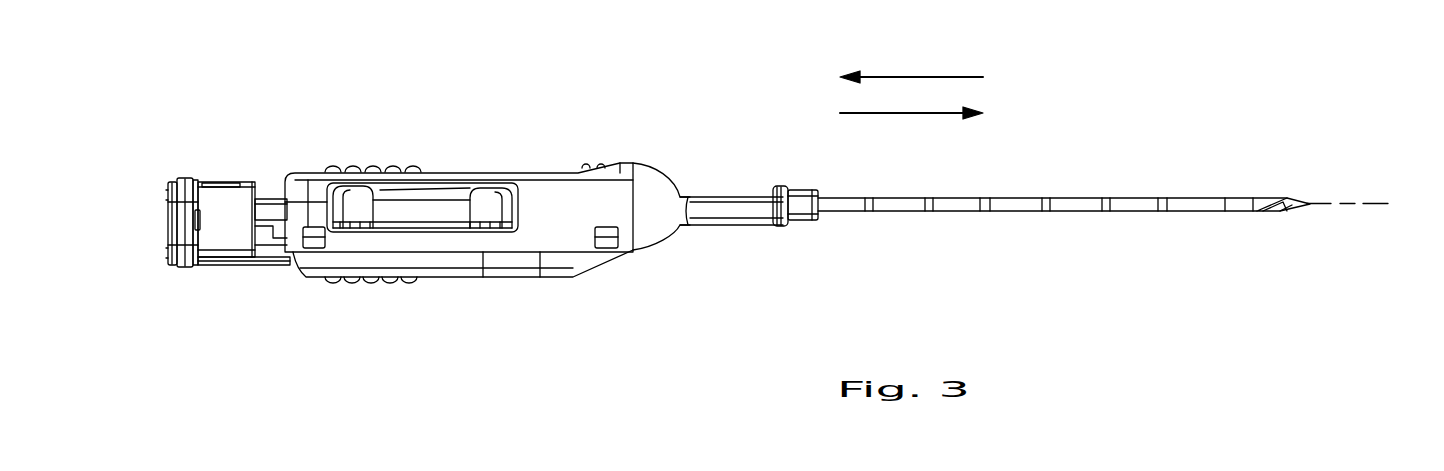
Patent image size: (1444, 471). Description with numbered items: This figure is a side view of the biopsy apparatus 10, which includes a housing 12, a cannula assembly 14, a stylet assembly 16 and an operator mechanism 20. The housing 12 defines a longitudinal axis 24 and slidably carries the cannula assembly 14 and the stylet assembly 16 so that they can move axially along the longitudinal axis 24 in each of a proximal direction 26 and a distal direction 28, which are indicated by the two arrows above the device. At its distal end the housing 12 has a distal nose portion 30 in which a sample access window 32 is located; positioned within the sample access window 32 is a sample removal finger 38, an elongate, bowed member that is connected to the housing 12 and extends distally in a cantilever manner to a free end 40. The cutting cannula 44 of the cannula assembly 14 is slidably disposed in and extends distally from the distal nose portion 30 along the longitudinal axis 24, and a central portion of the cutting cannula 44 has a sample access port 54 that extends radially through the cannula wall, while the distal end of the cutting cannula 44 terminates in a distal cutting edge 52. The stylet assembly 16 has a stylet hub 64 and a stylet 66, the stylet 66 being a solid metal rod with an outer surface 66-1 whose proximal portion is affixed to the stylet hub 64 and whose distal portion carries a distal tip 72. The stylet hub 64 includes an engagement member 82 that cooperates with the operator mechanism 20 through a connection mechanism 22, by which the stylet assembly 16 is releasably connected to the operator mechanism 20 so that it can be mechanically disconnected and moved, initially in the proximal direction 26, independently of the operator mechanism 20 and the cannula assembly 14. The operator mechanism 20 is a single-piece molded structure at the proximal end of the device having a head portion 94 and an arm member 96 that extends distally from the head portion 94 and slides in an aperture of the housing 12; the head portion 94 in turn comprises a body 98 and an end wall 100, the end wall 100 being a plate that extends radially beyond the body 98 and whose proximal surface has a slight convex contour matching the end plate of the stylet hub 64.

The biopsy apparatus 10 is at (120, 113).
The housing 12 is at (358, 138).
The cannula assembly 14 is at (1232, 185).
The stylet assembly 16 is at (155, 224).
The operator mechanism 20 is at (205, 276).
The connection mechanism 22 is at (221, 209).
The longitudinal axis 24 is at (1370, 203).
The proximal direction 26 is at (933, 77).
The distal direction 28 is at (900, 115).
The distal nose portion 30 is at (673, 237).
The sample access window 32 is at (729, 166).
The sample removal finger 38 is at (680, 193).
The free end 40 is at (707, 193).
The cutting cannula 44 is at (1020, 197).
The distal cutting edge 52 is at (1280, 212).
The sample access port 54 is at (766, 189).
The stylet hub 64 is at (165, 267).
The stylet 66 is at (1293, 213).
The outer surface 66-1 is at (737, 195).
The distal tip 72 is at (1300, 202).
The engagement member 82 is at (202, 222).
The head portion 94 is at (220, 168).
The arm member 96 is at (267, 262).
The body 98 is at (213, 183).
The end wall 100 is at (193, 180).